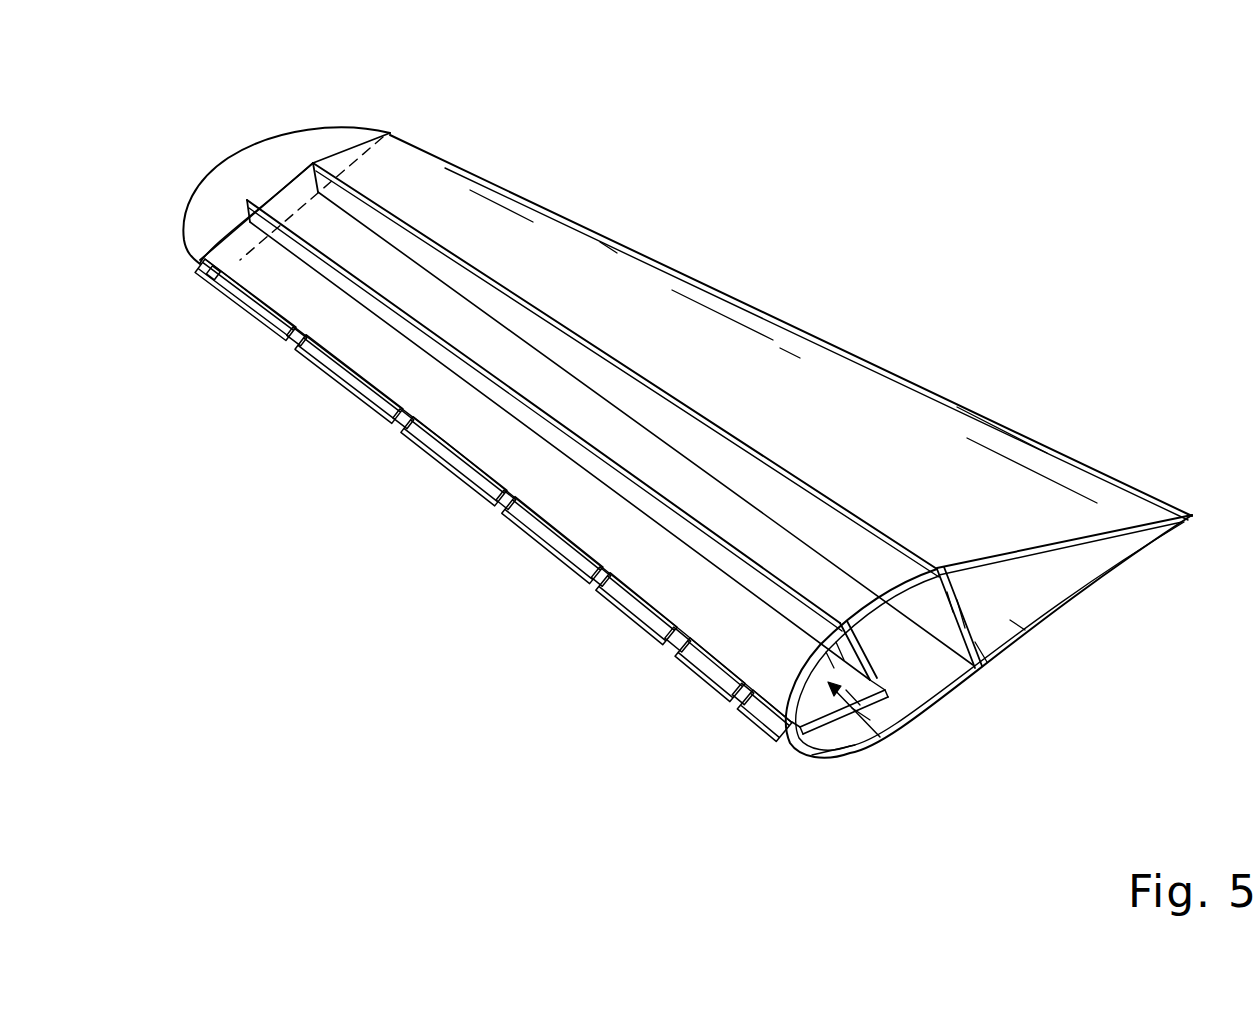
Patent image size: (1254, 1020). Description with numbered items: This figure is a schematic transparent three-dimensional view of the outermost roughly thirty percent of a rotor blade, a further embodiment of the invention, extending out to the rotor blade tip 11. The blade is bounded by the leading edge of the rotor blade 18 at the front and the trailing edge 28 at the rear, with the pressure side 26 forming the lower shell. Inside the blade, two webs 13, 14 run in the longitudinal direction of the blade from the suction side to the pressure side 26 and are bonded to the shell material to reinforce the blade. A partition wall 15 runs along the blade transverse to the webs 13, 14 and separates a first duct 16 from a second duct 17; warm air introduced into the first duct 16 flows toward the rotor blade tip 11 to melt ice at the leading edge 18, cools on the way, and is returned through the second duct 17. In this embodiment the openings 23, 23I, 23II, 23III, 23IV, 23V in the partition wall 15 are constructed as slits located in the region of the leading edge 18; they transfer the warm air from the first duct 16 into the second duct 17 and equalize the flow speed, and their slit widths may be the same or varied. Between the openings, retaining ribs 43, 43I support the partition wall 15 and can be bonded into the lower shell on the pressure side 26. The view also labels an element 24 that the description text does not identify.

The rotor blade tip 11 is at (213, 180).
The end edge of shell 24 is at (238, 220).
The trailing edge 28 is at (948, 397).
The web 13 is at (960, 623).
The web 14 is at (905, 700).
The leading edge of the rotor blade 18 is at (600, 590).
The opening 23 is at (712, 670).
The opening 23I is at (650, 620).
The opening 23II is at (537, 537).
The opening 23III is at (457, 480).
The opening 23IV is at (350, 390).
The opening 23V is at (267, 318).
The retaining rib 43 is at (752, 700).
The retaining rib 43I is at (680, 655).
The pressure side 26 is at (931, 726).
The first duct 16 is at (840, 742).
The partition wall 15 is at (813, 700).
The second duct 17 is at (853, 703).